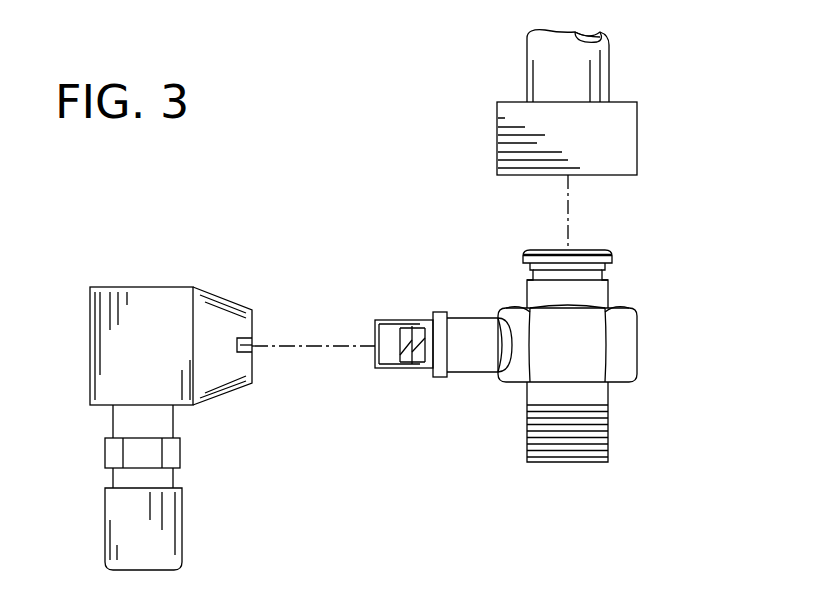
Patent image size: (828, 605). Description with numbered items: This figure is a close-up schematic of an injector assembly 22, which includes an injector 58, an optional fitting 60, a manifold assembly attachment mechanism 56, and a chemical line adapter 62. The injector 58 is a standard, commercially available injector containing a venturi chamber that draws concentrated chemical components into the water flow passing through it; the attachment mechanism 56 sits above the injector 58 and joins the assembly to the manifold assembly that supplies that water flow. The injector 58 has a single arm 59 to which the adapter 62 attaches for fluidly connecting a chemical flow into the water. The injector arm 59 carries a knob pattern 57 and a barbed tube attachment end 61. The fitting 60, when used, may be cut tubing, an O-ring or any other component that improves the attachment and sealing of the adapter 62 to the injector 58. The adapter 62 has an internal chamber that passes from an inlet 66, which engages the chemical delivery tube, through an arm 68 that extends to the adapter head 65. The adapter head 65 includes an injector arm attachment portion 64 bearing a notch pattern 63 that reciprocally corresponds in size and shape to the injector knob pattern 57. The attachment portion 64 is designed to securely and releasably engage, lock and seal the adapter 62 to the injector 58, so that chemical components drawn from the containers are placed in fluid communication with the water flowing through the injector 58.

The injector assembly 22 is at (418, 180).
The manifold assembly attachment mechanism 56 is at (627, 78).
The injector knob pattern 57 is at (443, 377).
The injector 58 is at (637, 347).
The injector arm 59 is at (468, 318).
The fitting 60 is at (385, 320).
The barbed tube attachment end 61 is at (413, 350).
The chemical line adapter 62 is at (90, 345).
The notch pattern 63 is at (255, 347).
The injector arm attachment portion 64 is at (228, 300).
The adapter head 65 is at (160, 358).
The inlet 66 is at (110, 566).
The arm 68 is at (105, 455).